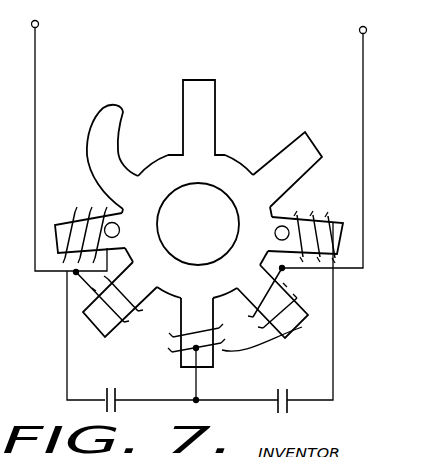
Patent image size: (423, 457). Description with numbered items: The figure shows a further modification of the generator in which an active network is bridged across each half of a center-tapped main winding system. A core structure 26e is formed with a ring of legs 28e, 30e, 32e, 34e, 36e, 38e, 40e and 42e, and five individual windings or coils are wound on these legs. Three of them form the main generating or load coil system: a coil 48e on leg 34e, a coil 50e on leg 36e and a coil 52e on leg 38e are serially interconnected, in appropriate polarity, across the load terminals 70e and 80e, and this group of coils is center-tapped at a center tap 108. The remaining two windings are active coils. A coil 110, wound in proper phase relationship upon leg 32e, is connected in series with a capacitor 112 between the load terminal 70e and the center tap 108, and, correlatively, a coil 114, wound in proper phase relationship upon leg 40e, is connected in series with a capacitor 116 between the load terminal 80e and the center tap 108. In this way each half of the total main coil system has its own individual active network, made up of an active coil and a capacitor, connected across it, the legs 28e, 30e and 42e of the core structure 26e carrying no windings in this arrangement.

The core structure 26e is at (157, 212).
The leg 28e is at (214, 86).
The leg 30e is at (323, 120).
The leg 32e is at (351, 214).
The leg 34e is at (302, 327).
The leg 36e is at (209, 366).
The leg 38e is at (107, 328).
The leg 40e is at (58, 256).
The leg 42e is at (97, 103).
The coil 48e is at (288, 289).
The coil 50e is at (222, 350).
The coil 52e is at (120, 326).
The load terminal 70e is at (359, 30).
The load terminal 80e is at (38, 24).
The center tap 108 is at (197, 350).
The coil 110 is at (300, 214).
The capacitor 112 is at (288, 403).
The coil 114 is at (92, 213).
The capacitor 116 is at (106, 402).